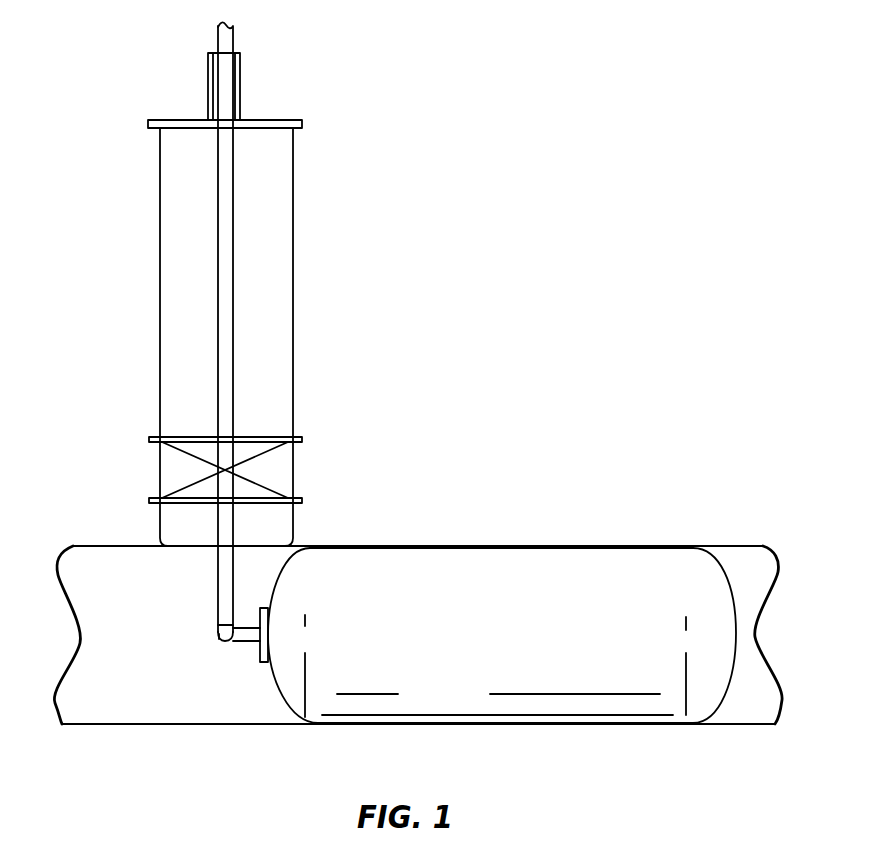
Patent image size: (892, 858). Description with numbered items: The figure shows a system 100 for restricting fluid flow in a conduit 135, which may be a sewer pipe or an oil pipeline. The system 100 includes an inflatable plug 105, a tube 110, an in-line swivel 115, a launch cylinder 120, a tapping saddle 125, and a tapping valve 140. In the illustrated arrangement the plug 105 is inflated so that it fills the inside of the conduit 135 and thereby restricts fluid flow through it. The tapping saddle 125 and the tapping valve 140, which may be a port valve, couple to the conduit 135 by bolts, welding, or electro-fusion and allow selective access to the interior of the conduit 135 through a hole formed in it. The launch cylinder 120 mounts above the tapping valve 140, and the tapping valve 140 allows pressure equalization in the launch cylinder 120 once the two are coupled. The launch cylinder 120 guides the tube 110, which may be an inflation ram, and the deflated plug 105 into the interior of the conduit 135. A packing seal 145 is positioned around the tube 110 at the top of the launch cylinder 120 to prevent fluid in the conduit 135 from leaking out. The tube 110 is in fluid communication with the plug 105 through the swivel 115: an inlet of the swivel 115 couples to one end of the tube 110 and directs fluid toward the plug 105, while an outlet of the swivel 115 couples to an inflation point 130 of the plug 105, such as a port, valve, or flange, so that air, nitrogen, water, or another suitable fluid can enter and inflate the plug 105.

The system 100 is at (595, 182).
The inflatable plug 105 is at (478, 570).
The tube 110 is at (232, 200).
The in-line swivel 115 is at (220, 652).
The launch cylinder 120 is at (292, 280).
The tapping saddle 125 is at (293, 527).
The inflation point 130 is at (263, 663).
The conduit 135 is at (107, 570).
The tapping valve 140 is at (293, 467).
The packing seal 145 is at (240, 72).